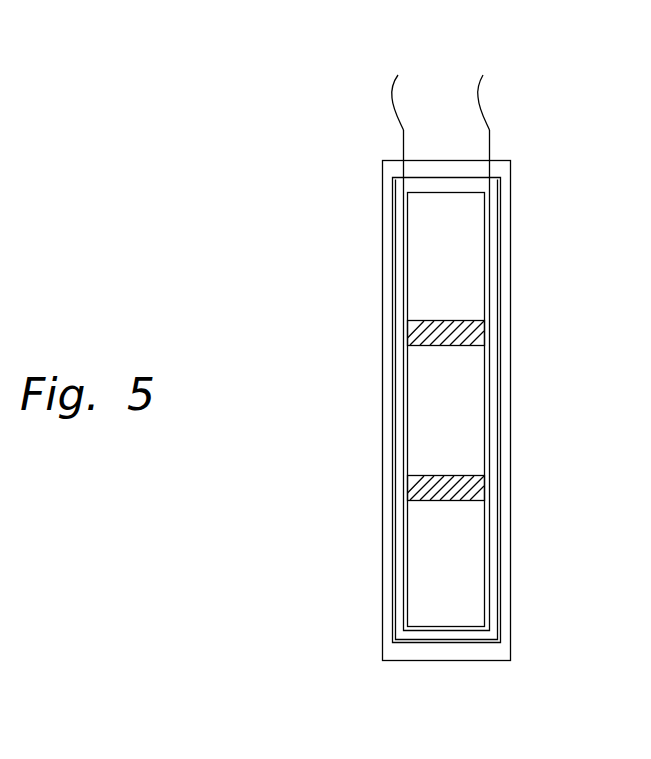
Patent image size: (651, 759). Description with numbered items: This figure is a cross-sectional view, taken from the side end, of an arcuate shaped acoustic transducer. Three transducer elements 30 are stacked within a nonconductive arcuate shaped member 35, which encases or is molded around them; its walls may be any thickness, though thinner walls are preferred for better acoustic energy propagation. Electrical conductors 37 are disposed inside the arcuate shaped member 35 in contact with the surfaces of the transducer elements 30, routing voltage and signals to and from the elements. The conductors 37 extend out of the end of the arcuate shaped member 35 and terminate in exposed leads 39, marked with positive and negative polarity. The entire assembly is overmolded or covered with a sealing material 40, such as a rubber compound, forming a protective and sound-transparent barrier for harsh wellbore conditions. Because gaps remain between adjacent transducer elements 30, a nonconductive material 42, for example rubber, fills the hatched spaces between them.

The transducer element 30 is at (463, 280).
The arcuate shaped member 35 is at (480, 635).
The electrical conductor 37 is at (403, 243).
The exposed lead 39 is at (392, 97).
The sealing material 40 is at (447, 653).
The nonconductive material 42 is at (462, 333).